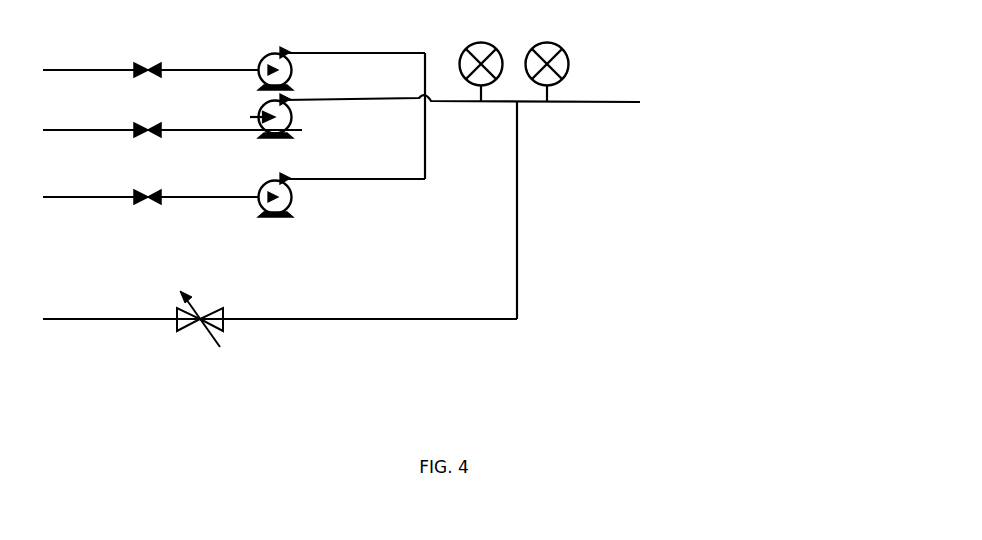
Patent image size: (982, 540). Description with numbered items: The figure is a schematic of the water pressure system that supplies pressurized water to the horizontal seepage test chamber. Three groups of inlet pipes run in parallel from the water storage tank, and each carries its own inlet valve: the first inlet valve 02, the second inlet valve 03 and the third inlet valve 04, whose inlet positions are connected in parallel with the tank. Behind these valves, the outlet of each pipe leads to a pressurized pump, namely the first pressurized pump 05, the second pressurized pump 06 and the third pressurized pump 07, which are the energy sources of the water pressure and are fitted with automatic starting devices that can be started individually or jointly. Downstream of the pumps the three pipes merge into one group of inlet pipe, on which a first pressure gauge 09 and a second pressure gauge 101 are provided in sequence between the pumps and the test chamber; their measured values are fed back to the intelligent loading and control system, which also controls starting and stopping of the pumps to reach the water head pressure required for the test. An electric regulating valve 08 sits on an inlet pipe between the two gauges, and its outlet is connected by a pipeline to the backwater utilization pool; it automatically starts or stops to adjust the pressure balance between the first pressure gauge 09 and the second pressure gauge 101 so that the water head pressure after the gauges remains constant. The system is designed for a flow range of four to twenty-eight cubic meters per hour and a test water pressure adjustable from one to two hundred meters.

The first inlet valve 02 is at (147, 49).
The second inlet valve 03 is at (147, 115).
The third inlet valve 04 is at (147, 186).
The first pressurized pump 05 is at (297, 68).
The second pressurized pump 06 is at (298, 118).
The third pressurized pump 07 is at (297, 195).
The electric regulating valve 08 is at (200, 309).
The first pressure gauge 09 is at (481, 56).
The second pressure gauge 101 is at (547, 55).